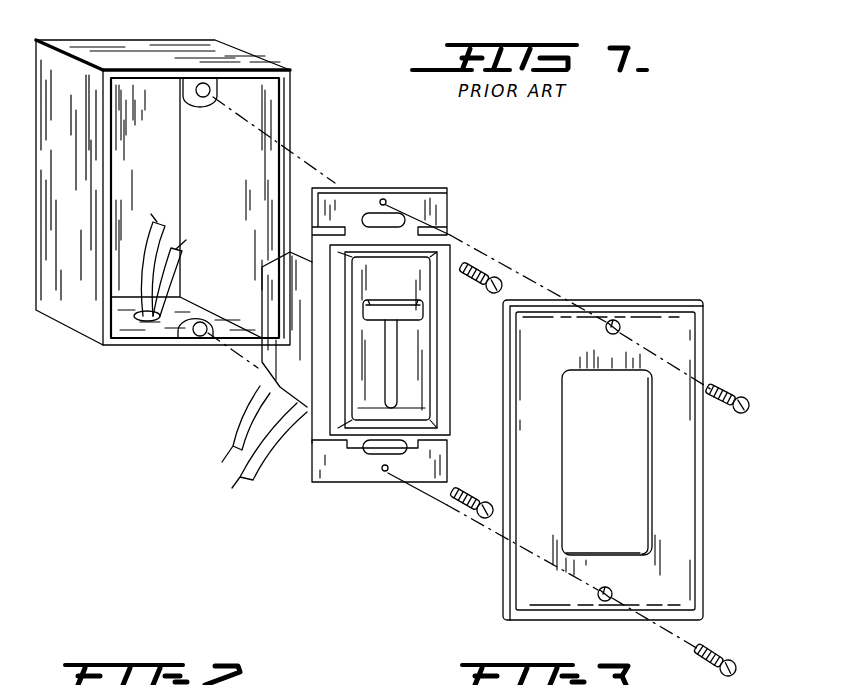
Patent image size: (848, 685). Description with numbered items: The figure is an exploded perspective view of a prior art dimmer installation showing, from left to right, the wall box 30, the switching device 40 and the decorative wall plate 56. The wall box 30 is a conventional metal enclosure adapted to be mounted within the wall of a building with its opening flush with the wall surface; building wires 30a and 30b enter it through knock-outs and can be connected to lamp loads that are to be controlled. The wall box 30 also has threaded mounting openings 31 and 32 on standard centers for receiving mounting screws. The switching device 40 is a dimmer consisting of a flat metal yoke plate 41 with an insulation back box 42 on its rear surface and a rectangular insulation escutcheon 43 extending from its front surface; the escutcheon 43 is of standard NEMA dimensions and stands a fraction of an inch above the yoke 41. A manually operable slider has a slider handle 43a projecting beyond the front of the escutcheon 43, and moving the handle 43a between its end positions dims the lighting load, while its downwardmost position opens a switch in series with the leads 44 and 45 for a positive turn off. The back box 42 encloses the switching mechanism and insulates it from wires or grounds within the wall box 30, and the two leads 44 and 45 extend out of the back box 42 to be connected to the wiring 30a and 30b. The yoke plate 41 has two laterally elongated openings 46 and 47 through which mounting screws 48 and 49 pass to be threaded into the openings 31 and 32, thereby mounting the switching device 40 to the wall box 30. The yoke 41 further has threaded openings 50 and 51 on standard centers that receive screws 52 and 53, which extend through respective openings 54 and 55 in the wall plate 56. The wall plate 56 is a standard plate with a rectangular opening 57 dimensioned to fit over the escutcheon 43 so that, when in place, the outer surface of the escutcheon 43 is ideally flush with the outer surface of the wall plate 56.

The wall box 30 is at (148, 42).
The wire 30a is at (150, 226).
The wire 30b is at (181, 272).
The threaded mounting opening 31 is at (203, 107).
The threaded mounting opening 32 is at (199, 337).
The switching device 40 is at (463, 212).
The yoke plate 41 is at (421, 197).
The insulation back box 42 is at (274, 288).
The insulation escutcheon 43 is at (441, 387).
The slider handle 43a is at (413, 323).
The lead 44 is at (262, 417).
The lead 45 is at (266, 462).
The laterally elongated opening 46 is at (363, 216).
The laterally elongated opening 47 is at (363, 453).
The mounting screw 48 is at (477, 285).
The mounting screw 49 is at (463, 514).
The threaded opening 50 is at (383, 199).
The threaded opening 51 is at (383, 472).
The screw 52 is at (727, 393).
The screw 53 is at (714, 655).
The opening 54 is at (617, 323).
The opening 55 is at (617, 589).
The wall plate 56 is at (598, 290).
The rectangular opening 57 is at (634, 479).